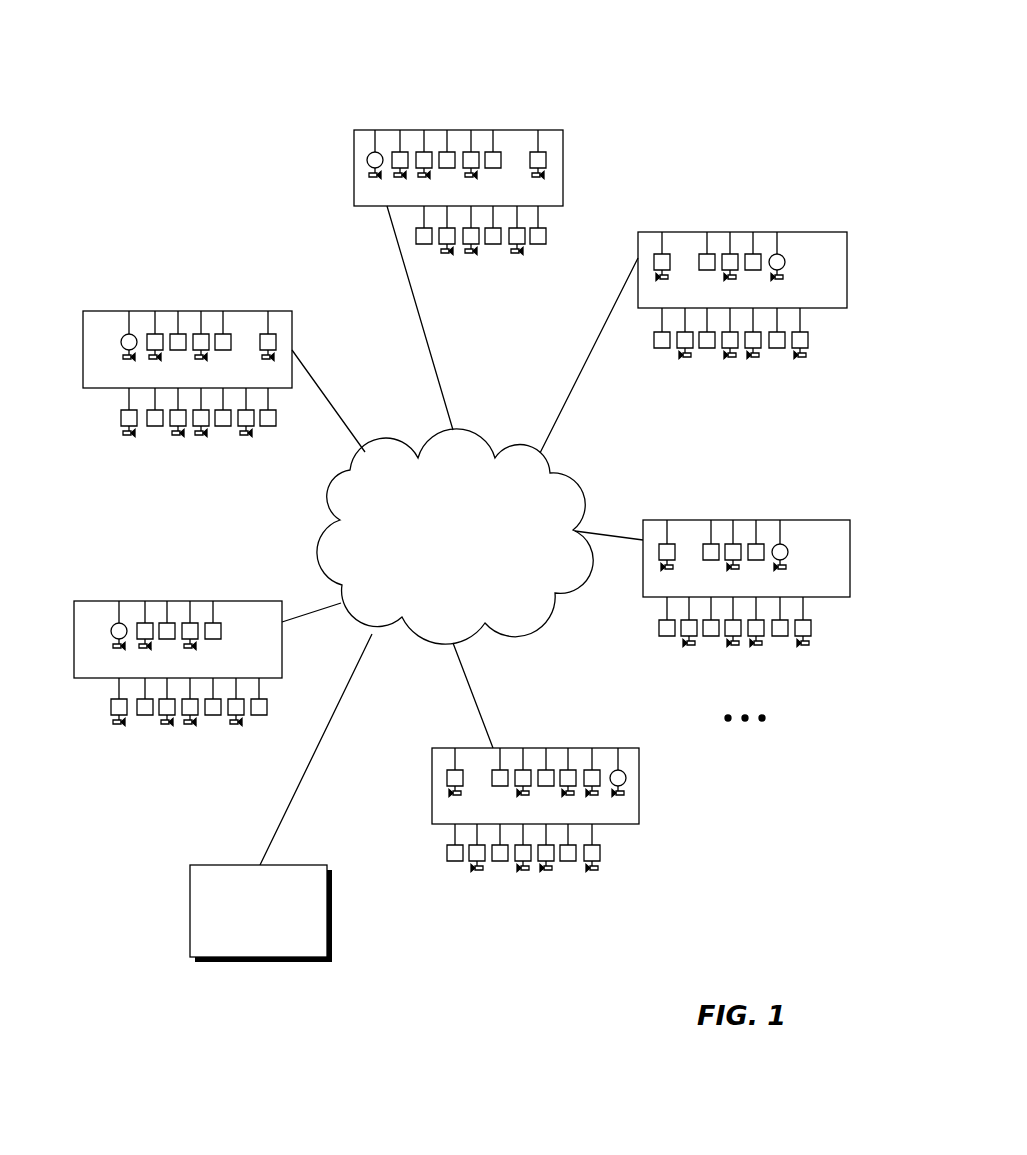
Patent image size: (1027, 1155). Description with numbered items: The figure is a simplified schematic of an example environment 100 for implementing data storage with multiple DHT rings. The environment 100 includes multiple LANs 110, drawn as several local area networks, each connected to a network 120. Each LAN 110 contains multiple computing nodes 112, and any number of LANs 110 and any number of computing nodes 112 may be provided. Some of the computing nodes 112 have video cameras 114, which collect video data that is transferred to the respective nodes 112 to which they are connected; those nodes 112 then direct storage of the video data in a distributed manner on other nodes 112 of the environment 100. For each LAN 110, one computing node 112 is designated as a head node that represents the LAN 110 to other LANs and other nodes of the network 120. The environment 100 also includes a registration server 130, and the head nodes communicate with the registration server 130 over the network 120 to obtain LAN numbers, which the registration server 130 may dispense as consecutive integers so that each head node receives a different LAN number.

The environment 100 is at (690, 72).
The LANs 110 is at (124, 471).
The computing nodes 112 is at (137, 790).
The video cameras 114 is at (112, 729).
The network 120 is at (442, 558).
The registration server 130 is at (244, 946).